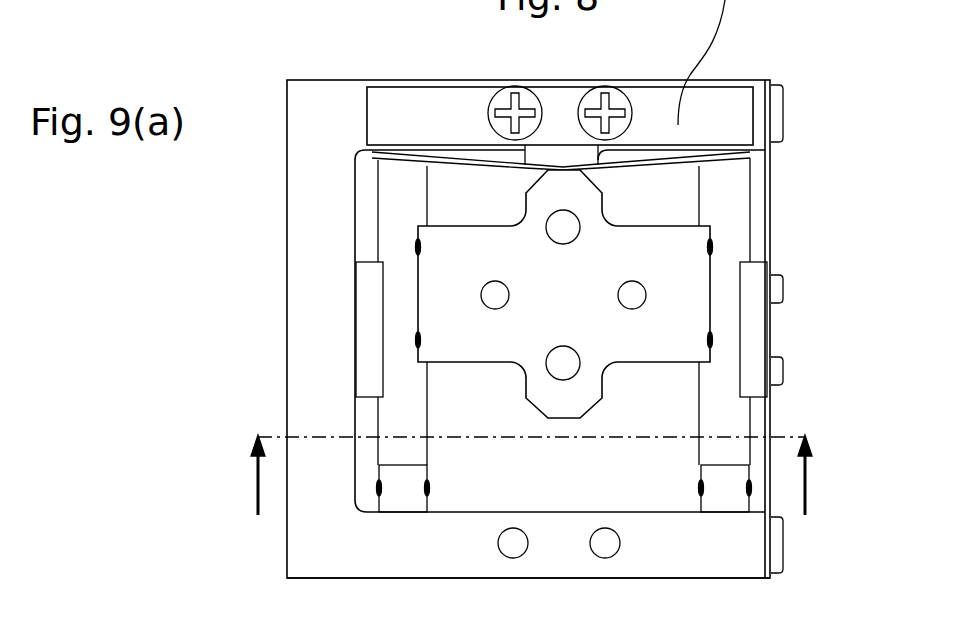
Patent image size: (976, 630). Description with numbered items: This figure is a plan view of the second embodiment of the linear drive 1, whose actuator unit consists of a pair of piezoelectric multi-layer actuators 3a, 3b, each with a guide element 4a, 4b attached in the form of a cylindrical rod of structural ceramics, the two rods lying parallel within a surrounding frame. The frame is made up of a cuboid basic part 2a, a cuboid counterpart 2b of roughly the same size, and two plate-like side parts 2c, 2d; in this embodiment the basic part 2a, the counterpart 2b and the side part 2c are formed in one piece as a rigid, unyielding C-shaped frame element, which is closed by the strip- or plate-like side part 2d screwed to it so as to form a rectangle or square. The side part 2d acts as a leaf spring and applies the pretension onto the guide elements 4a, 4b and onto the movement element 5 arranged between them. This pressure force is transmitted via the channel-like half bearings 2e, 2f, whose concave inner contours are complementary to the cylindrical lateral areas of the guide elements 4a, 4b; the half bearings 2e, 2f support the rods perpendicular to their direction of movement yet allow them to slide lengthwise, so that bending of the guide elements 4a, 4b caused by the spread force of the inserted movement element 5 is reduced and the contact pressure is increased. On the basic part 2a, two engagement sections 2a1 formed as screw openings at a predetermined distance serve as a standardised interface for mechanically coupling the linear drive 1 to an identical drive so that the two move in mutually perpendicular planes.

The linear drive 1 is at (245, 412).
The basic part 2a is at (378, 545).
The engagement sections 2a1 is at (500, 553).
The counterpart 2b is at (357, 103).
The side part 2c is at (312, 368).
The side part 2d is at (775, 225).
The half bearing 2e is at (367, 282).
The half bearing 2f is at (753, 247).
The piezoelectric multi-layer actuator 3a is at (400, 490).
The piezoelectric multi-layer actuator 3b is at (720, 489).
The guide element 4a is at (388, 181).
The guide element 4b is at (718, 203).
The movement element 5 is at (682, 274).